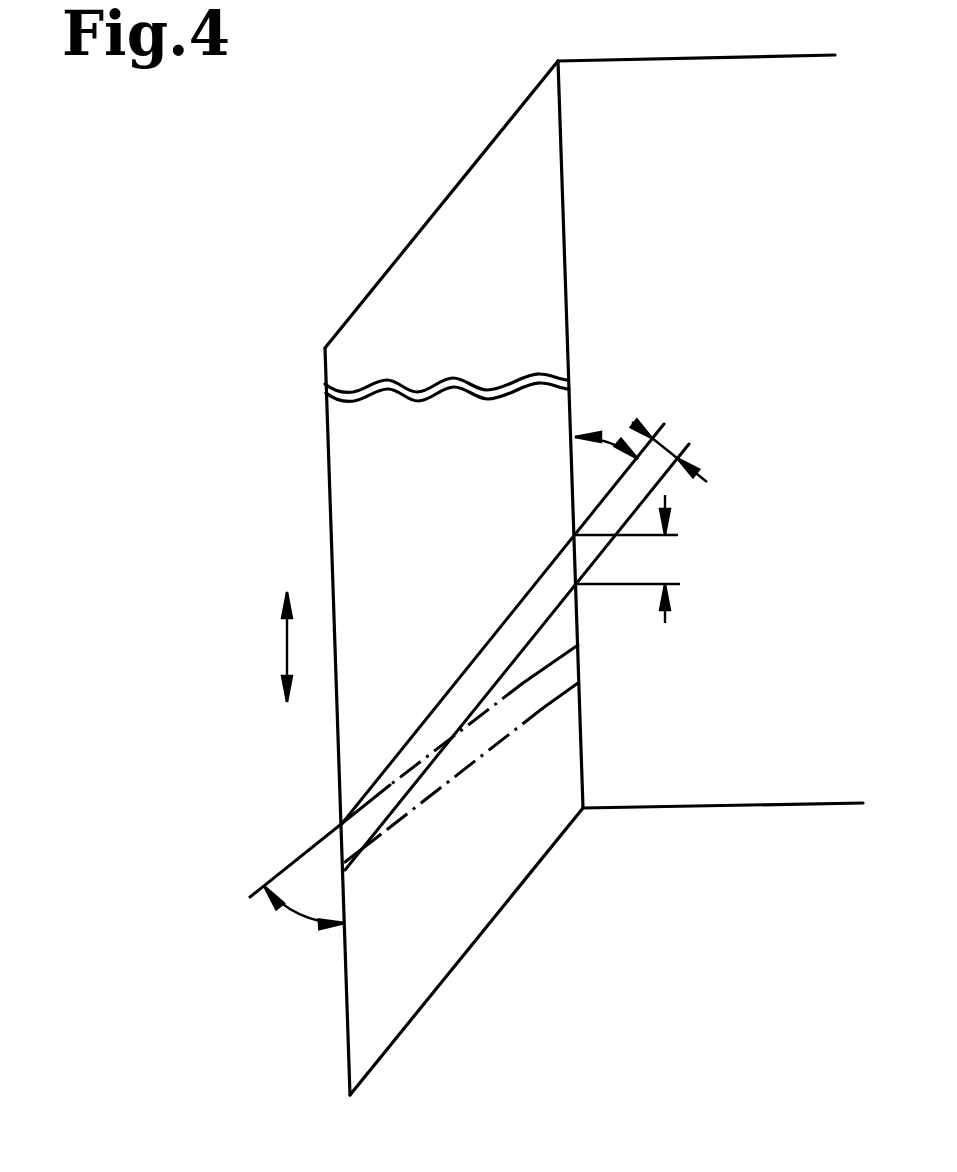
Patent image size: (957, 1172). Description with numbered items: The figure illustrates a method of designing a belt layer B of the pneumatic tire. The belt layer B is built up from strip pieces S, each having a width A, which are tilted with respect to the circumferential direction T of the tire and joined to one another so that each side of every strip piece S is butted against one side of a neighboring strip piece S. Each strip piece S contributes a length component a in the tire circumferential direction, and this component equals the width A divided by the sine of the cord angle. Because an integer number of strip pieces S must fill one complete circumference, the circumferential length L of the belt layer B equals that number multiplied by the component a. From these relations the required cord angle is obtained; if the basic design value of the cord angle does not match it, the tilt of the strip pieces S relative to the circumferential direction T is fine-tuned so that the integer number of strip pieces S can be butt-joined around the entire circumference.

The circumferential length of belt layer L is at (820, 55).
The belt layer B is at (472, 907).
The strip piece S is at (437, 710).
The width of strip piece A is at (681, 451).
The length component of strip piece in tire circumferential direction a is at (638, 561).
The circumferential direction of tire T is at (273, 647).